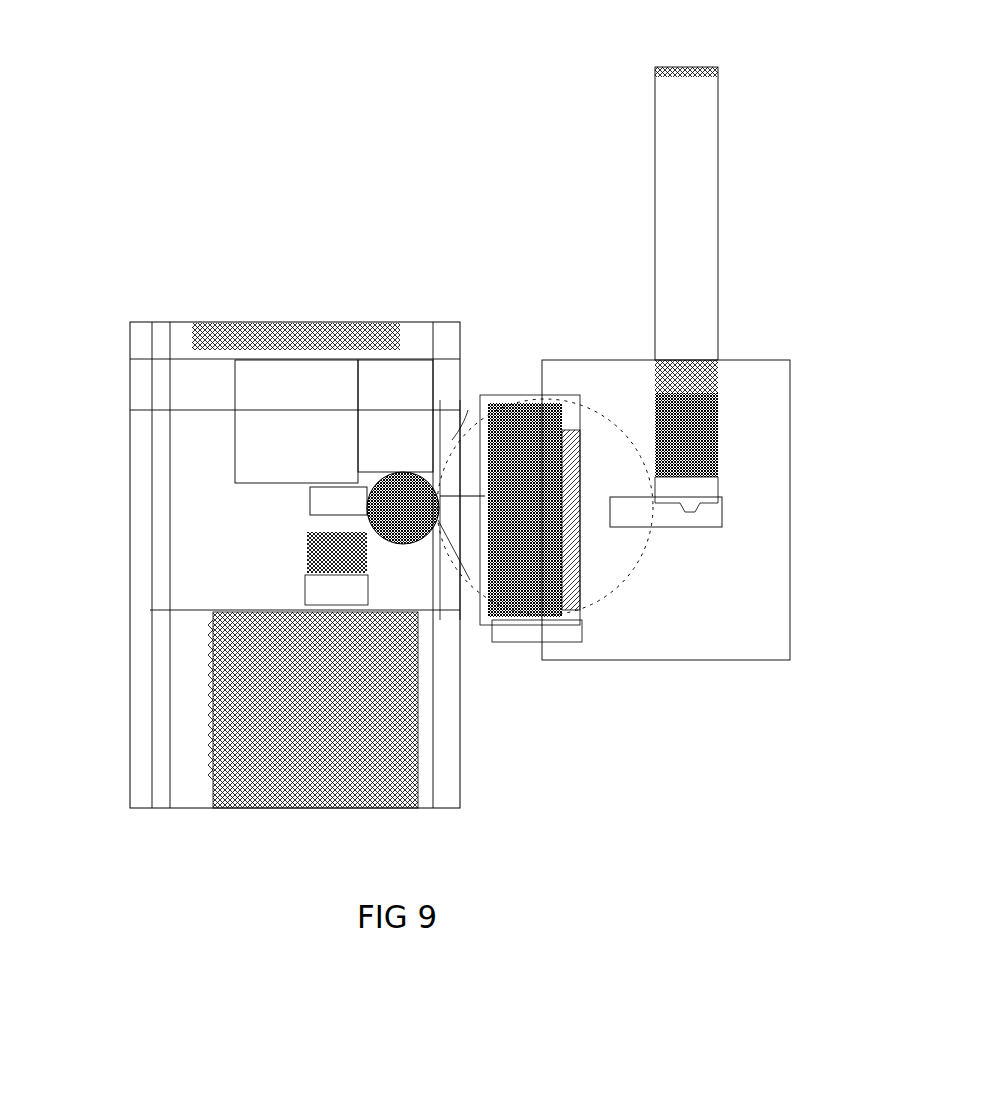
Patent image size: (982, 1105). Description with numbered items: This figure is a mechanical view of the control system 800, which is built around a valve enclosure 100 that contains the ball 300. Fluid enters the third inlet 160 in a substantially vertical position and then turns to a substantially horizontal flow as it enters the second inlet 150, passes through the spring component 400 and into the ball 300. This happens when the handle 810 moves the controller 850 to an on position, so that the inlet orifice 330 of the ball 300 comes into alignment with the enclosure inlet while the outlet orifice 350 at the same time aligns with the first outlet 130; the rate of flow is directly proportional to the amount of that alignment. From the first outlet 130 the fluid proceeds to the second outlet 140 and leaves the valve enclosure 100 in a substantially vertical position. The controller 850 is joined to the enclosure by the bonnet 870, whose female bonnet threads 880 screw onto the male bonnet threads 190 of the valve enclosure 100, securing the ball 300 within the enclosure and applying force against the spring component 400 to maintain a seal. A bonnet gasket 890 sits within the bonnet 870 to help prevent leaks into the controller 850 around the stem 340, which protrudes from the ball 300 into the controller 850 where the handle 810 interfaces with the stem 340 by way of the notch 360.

The control system 800 is at (113, 70).
The valve enclosure 100 is at (128, 566).
The second outlet 140 is at (296, 421).
The first outlet 130 is at (395, 416).
The second inlet 150 is at (338, 502).
The third inlet 160 is at (336, 568).
The spring component 400 is at (403, 537).
The ball 300 is at (463, 510).
The inlet orifice 330 is at (455, 550).
The outlet orifice 350 is at (467, 425).
The male bonnet threads 190 is at (498, 403).
The female bonnet threads 880 is at (538, 403).
The bonnet gasket 890 is at (583, 530).
The bonnet 870 is at (517, 645).
The controller 850 is at (705, 632).
The stem 340 is at (666, 512).
The notch 360 is at (697, 503).
The handle 810 is at (713, 153).